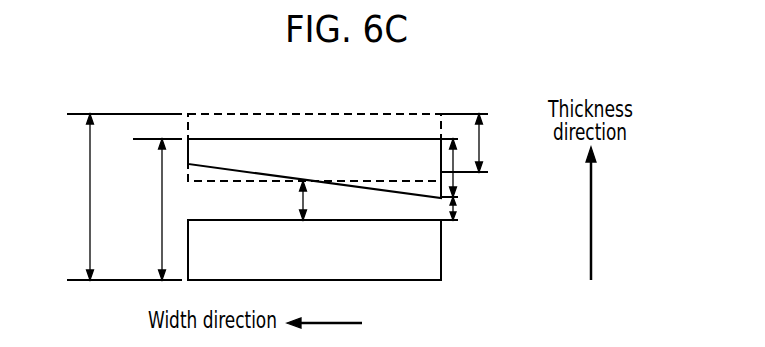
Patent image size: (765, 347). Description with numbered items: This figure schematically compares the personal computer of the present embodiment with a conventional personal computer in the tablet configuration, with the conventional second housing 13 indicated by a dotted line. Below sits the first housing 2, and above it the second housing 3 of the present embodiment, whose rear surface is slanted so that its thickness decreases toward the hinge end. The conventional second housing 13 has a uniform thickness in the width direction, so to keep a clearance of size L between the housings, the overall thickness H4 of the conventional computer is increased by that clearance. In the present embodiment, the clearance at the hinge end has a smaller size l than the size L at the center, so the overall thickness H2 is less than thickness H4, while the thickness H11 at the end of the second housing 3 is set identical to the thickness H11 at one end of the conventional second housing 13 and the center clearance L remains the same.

The second housing 13 is at (282, 113).
The second housing 3 is at (393, 139).
The first housing 2 is at (441, 252).
The thickness H4 is at (86, 208).
The thickness H2 is at (156, 208).
The thickness H11 is at (482, 142).
The size of clearance L is at (299, 198).
The size of clearance l is at (458, 212).